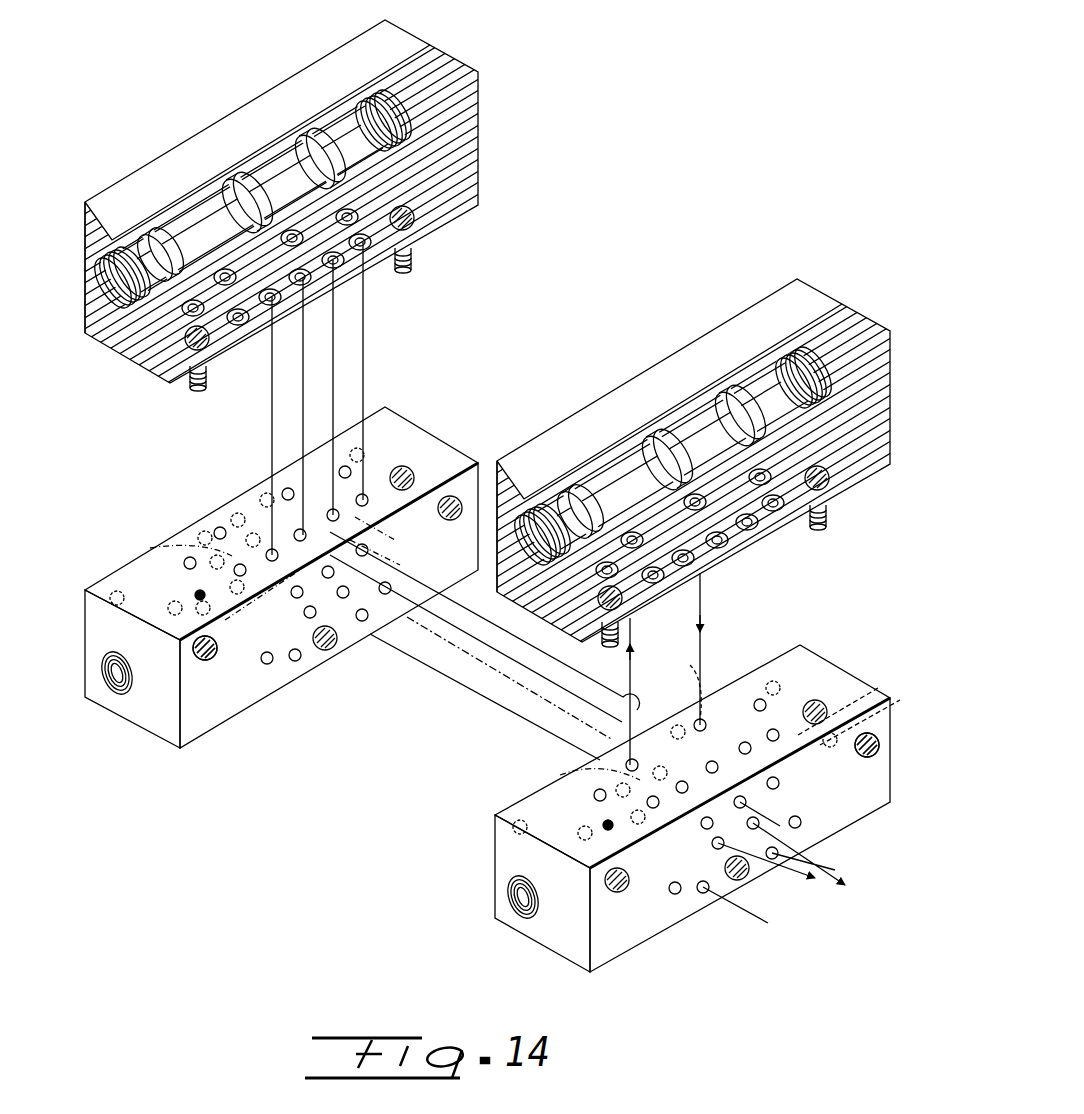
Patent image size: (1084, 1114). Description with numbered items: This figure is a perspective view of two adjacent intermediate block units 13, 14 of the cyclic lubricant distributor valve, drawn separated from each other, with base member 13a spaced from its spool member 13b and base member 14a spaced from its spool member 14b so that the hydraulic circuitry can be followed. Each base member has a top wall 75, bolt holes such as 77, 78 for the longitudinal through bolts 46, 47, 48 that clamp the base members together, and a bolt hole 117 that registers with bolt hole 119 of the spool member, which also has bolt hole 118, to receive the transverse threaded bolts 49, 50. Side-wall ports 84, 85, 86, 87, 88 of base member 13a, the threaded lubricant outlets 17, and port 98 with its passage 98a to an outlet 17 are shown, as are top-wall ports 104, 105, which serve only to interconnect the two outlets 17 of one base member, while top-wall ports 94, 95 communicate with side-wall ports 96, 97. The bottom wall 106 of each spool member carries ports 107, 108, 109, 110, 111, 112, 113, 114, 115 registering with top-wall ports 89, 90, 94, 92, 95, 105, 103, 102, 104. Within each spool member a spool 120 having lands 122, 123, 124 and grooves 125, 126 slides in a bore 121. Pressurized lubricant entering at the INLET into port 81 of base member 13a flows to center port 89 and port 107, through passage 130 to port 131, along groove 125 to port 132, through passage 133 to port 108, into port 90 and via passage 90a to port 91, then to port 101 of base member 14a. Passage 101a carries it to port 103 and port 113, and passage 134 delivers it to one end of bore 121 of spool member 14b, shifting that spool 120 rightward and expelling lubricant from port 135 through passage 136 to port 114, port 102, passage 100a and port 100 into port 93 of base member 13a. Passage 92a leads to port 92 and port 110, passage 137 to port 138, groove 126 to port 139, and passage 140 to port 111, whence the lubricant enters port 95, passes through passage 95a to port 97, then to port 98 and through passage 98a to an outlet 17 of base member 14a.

The intermediate block unit 13 is at (467, 329).
The base member 13a is at (426, 412).
The spool member 13b is at (482, 140).
The intermediate block unit 14 is at (872, 600).
The base member 14a is at (895, 790).
The spool member 14b is at (895, 418).
The lubricant outlet 17 is at (115, 695).
The through bolt 46 is at (867, 758).
The through bolt 47 is at (742, 878).
The through bolt 48 is at (212, 660).
The threaded bolt 49 is at (192, 400).
The threaded bolt 50 is at (414, 258).
The top wall 75 is at (420, 455).
The bolt hole 77 is at (766, 880).
The bolt hole 78 is at (205, 660).
The port 81 is at (235, 513).
The port 84 is at (343, 598).
The port 85 is at (362, 621).
The port 86 is at (334, 572).
The port 87 is at (310, 618).
The port 88 is at (295, 661).
The center port 89 is at (296, 531).
The port 90 is at (272, 561).
The passage 90a is at (268, 614).
The port 91 is at (297, 598).
The port 92 is at (330, 510).
The passage 92a is at (408, 551).
The port 93 is at (368, 550).
The port 94 is at (234, 570).
The port 95 is at (368, 500).
The passage 95a is at (380, 518).
The port 96 is at (267, 664).
The port 97 is at (385, 594).
The port 98 is at (716, 722).
The passage 98a is at (893, 710).
The port 100 is at (262, 494).
The passage 100a is at (682, 683).
The port 101 is at (165, 548).
The passage 101a is at (595, 785).
The port 102 is at (288, 488).
The port 103 is at (214, 530).
The port 104 is at (350, 468).
The port 105 is at (184, 563).
The bottom wall 106 is at (460, 212).
The port 107 is at (338, 290).
The port 108 is at (238, 326).
The port 109 is at (225, 322).
The port 110 is at (344, 264).
The port 111 is at (370, 250).
The port 112 is at (182, 310).
The port 113 is at (214, 278).
The port 114 is at (285, 212).
The port 115 is at (392, 196).
The bolt hole 117 is at (410, 476).
The bolt hole 118 is at (188, 343).
The bolt hole 119 is at (470, 215).
The spool 120 is at (335, 117).
The bore 121 is at (290, 85).
The land 122 is at (150, 200).
The land 123 is at (258, 172).
The land 124 is at (388, 120).
The groove 125 is at (240, 190).
The groove 126 is at (300, 112).
The passage 130 is at (266, 306).
The port 131 is at (290, 241).
The port 132 is at (215, 200).
The passage 133 is at (258, 297).
The passage 134 is at (622, 552).
The port 135 is at (400, 128).
The passage 136 is at (805, 437).
The passage 137 is at (406, 218).
The port 138 is at (302, 140).
The port 139 is at (328, 172).
The passage 140 is at (350, 210).
The inlet INLET is at (205, 500).